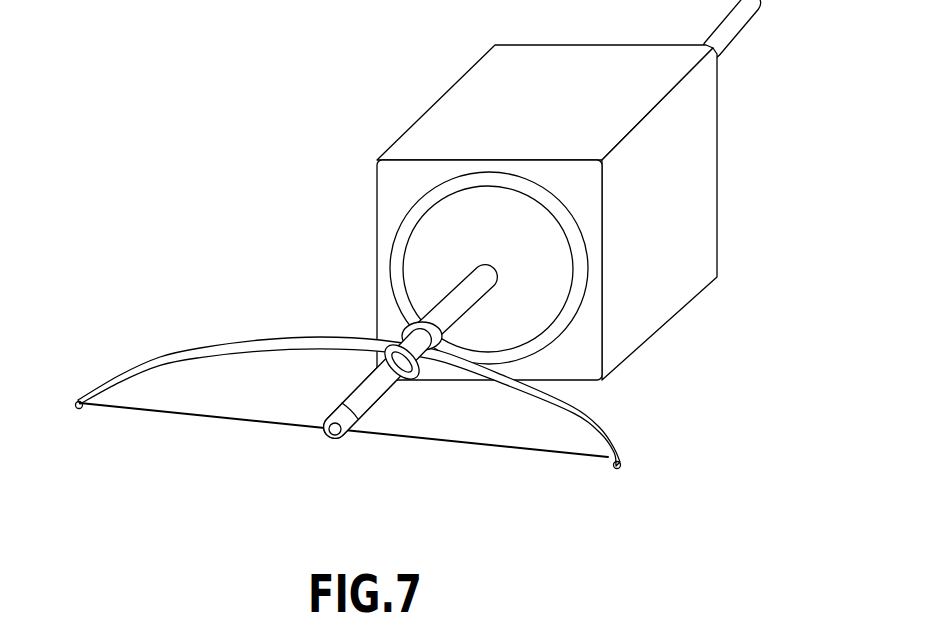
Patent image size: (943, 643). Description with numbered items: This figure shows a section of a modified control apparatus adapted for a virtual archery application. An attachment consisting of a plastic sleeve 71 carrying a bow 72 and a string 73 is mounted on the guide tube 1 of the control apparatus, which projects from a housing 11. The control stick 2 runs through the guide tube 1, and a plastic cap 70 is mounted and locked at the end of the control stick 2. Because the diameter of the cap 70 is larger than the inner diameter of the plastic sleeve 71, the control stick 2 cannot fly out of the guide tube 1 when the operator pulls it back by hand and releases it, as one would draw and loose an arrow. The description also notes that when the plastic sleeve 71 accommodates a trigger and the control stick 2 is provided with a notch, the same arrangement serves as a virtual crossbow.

The guide tube 1 is at (470, 285).
The control stick 2 is at (742, 15).
The housing 11 is at (465, 107).
The plastic cap 70 is at (325, 438).
The plastic sleeve 71 is at (390, 333).
The bow 72 is at (587, 418).
The string 73 is at (547, 453).